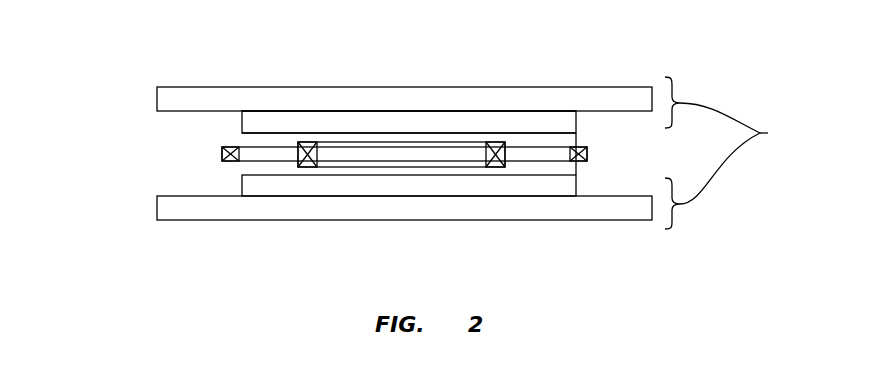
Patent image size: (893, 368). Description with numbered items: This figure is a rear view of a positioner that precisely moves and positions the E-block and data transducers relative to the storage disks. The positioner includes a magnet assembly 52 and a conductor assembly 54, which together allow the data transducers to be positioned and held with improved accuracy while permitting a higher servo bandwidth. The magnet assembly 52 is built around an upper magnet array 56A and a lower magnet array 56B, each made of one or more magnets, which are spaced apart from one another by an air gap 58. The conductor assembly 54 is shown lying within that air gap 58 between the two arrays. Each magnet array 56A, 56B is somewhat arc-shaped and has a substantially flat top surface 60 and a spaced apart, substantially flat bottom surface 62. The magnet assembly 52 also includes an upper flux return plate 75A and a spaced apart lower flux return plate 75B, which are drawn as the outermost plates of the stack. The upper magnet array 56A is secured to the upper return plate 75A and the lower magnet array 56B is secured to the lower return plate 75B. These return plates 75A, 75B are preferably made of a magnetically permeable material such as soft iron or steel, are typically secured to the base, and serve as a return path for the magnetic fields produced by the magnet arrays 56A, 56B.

The magnet assembly 52 is at (735, 153).
The conductor assembly 54 is at (216, 156).
The upper magnet array 56A is at (236, 120).
The lower magnet array 56B is at (236, 183).
The air gap 58 is at (588, 168).
The top surface 60 is at (300, 112).
The bottom surface 62 is at (352, 133).
The upper flux return plate 75A is at (150, 100).
The lower flux return plate 75B is at (150, 205).